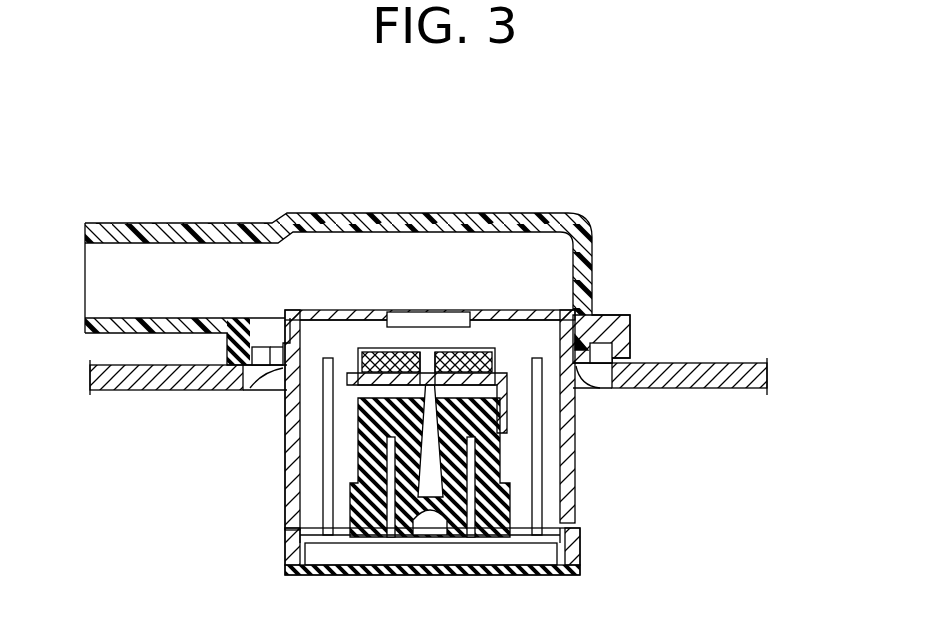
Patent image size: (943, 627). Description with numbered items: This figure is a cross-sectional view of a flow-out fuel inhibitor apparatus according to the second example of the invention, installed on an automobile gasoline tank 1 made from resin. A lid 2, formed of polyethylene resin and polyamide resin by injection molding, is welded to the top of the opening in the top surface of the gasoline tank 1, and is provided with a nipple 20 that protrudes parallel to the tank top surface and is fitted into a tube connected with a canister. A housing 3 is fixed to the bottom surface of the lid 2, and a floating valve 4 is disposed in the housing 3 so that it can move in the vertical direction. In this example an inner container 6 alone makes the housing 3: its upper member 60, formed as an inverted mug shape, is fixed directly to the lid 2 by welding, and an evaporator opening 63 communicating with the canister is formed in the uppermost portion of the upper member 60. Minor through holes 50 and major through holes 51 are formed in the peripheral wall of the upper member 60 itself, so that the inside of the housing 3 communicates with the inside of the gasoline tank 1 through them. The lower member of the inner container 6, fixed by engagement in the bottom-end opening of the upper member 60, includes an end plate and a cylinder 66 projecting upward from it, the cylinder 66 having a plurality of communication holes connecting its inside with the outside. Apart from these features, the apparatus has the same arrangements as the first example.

The gasoline tank 1 is at (700, 363).
The lid 2 is at (548, 212).
The housing 3 is at (583, 478).
The floating valve 4 is at (490, 393).
The inner container 6 is at (427, 326).
The nipple 20 is at (108, 225).
The minor through holes 50 is at (287, 370).
The major through holes 51 is at (287, 505).
The upper member 60 is at (290, 428).
The evaporator opening 63 is at (410, 318).
The cylinder 66 is at (323, 455).